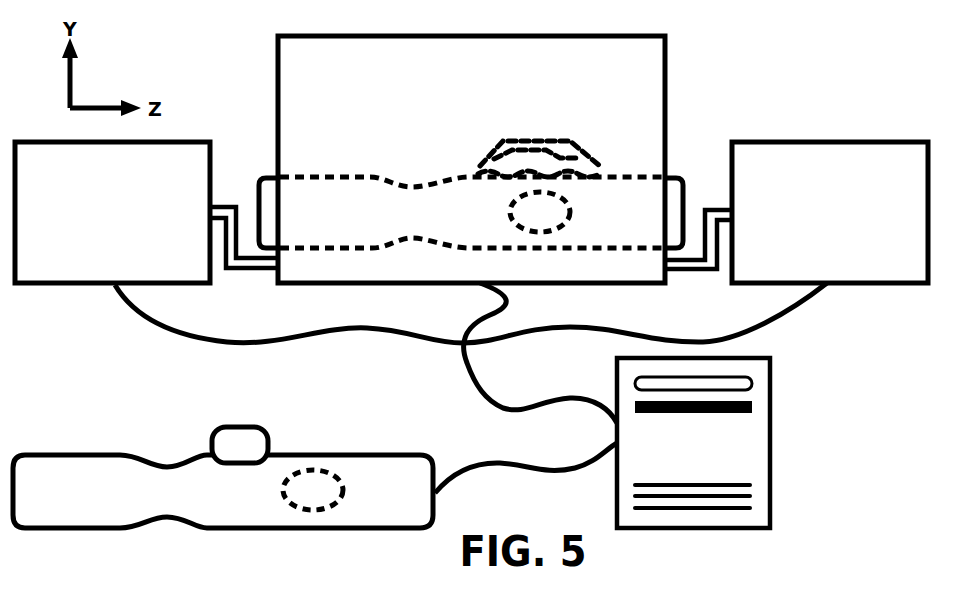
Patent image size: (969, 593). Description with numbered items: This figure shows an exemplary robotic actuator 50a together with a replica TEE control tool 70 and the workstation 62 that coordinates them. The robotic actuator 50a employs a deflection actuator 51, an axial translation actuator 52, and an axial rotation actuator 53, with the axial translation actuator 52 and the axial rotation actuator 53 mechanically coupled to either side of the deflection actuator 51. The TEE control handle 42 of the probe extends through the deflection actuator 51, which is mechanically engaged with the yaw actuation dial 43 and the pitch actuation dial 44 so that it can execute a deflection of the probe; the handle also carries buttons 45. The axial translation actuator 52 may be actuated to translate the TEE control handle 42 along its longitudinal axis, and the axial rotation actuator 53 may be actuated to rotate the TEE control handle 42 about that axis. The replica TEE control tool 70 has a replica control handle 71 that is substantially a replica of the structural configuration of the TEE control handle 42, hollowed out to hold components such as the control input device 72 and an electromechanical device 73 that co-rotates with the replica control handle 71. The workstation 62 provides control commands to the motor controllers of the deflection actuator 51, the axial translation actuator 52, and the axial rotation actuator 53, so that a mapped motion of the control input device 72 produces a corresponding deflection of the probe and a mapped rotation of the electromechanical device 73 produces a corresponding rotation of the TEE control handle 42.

The TEE control handle 42 is at (265, 204).
The yaw actuation dial 43 is at (588, 131).
The pitch actuation dial 44 is at (630, 146).
The buttons 45 is at (530, 222).
The robotic actuator 50a is at (206, 75).
The deflection actuator 51 is at (459, 101).
The axial translation actuator 52 is at (102, 267).
The axial rotation actuator 53 is at (819, 267).
The workstation 62 is at (770, 440).
The replica TEE control tool 70 is at (160, 424).
The replica control handle 71 is at (83, 456).
The control input device 72 is at (230, 456).
The electromechanical device 73 is at (303, 501).